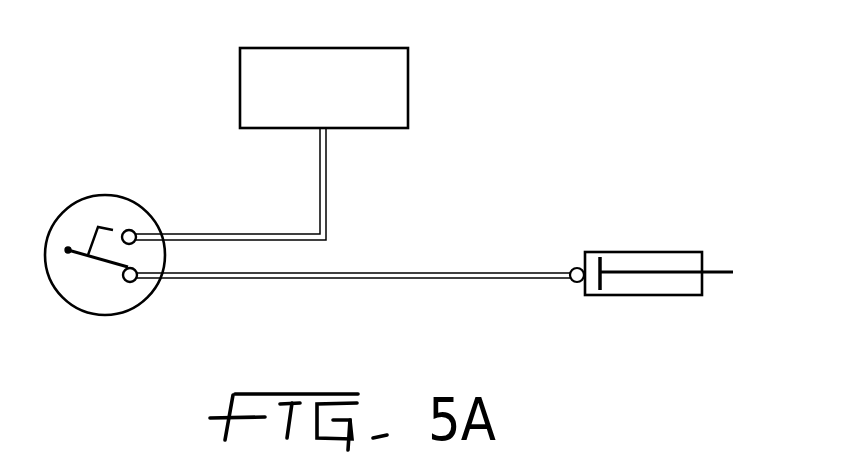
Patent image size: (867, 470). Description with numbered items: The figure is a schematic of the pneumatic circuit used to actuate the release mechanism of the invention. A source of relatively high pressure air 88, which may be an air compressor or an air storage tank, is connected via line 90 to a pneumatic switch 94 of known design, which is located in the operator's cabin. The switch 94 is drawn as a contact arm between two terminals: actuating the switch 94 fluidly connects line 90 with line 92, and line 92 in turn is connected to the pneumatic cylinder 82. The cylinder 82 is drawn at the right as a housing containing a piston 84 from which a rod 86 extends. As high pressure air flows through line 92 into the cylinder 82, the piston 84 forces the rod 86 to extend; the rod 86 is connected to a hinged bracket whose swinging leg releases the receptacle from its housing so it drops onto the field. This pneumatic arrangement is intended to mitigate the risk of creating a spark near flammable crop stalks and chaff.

The pneumatic cylinder 82 is at (657, 237).
The piston 84 is at (605, 278).
The rod 86 is at (677, 272).
The source of relatively high pressure air 88 is at (398, 90).
The line 90 is at (327, 200).
The line 92 is at (457, 272).
The pneumatic switch 94 is at (80, 197).